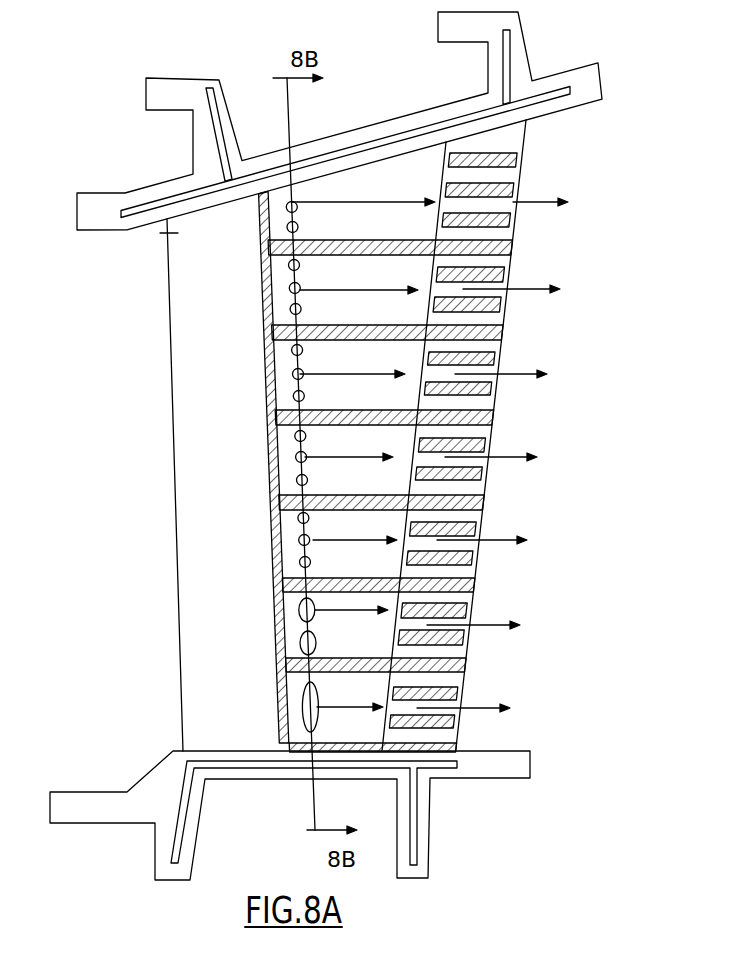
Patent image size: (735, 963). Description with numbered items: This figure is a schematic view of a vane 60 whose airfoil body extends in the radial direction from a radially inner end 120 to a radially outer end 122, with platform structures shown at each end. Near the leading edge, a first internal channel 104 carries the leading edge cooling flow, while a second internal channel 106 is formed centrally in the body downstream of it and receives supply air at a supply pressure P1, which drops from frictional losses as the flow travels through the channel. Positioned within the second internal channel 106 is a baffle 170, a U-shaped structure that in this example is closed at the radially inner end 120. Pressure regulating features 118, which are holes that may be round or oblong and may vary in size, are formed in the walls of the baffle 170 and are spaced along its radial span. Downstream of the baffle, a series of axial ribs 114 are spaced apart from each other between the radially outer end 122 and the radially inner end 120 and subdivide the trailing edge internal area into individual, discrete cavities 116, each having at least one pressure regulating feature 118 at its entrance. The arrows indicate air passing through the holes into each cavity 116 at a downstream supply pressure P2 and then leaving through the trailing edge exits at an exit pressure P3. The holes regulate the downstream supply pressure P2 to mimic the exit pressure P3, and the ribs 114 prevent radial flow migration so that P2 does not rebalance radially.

The vane 60 is at (632, 78).
The first internal channel 104 is at (183, 325).
The second internal channel 106 is at (372, 162).
The axial ribs 114 is at (508, 247).
The individual cavities 116 is at (387, 190).
The pressure regulating features 118 is at (294, 436).
The radially inner end 120 is at (200, 727).
The radially outer end 122 is at (167, 233).
The baffle 170 is at (325, 388).
The supply pressure P1 is at (290, 286).
The downstream supply pressure P2 is at (498, 258).
The exit pressure P3 is at (495, 360).